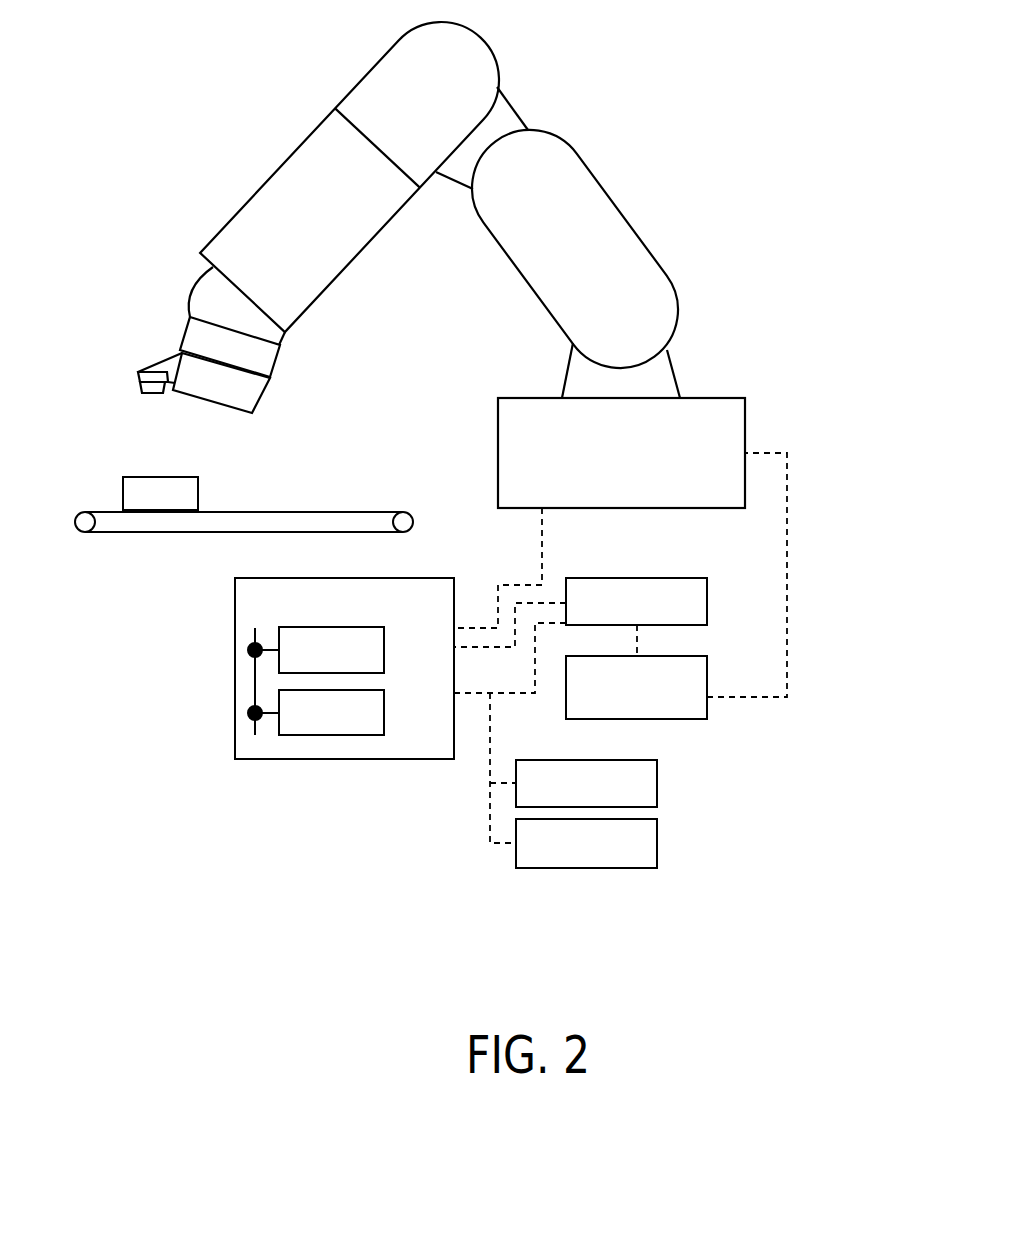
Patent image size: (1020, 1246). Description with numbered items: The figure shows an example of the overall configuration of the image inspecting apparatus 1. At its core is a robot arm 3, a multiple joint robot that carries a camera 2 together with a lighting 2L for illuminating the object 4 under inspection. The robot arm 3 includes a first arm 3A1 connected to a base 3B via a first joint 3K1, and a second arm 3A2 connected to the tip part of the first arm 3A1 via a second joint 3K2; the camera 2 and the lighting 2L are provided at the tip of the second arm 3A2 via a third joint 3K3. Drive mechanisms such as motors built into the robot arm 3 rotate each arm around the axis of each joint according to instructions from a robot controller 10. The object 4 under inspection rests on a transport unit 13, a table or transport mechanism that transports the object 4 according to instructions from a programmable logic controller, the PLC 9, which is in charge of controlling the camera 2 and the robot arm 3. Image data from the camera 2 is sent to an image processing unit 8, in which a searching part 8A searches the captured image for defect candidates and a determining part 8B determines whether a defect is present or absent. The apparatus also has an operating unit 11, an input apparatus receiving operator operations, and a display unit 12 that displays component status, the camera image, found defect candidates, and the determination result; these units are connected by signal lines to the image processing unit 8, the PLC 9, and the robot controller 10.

The image inspecting apparatus 1 is at (830, 287).
The camera 2 is at (210, 403).
The lighting 2L is at (153, 396).
The robot arm 3 is at (625, 132).
The first arm 3A1 is at (627, 215).
The second arm 3A2 is at (318, 128).
The base 3B is at (718, 398).
The first joint 3K1 is at (672, 358).
The second joint 3K2 is at (513, 103).
The third joint 3K3 is at (200, 285).
The object under inspection 4 is at (123, 492).
The image processing unit 8 is at (454, 604).
The searching part 8A is at (384, 650).
The determining part 8B is at (384, 713).
The programmable logic controller (PLC) 9 is at (707, 603).
The robot controller 10 is at (707, 685).
The operating unit 11 is at (657, 787).
The display unit 12 is at (657, 845).
The transport unit 13 is at (390, 510).